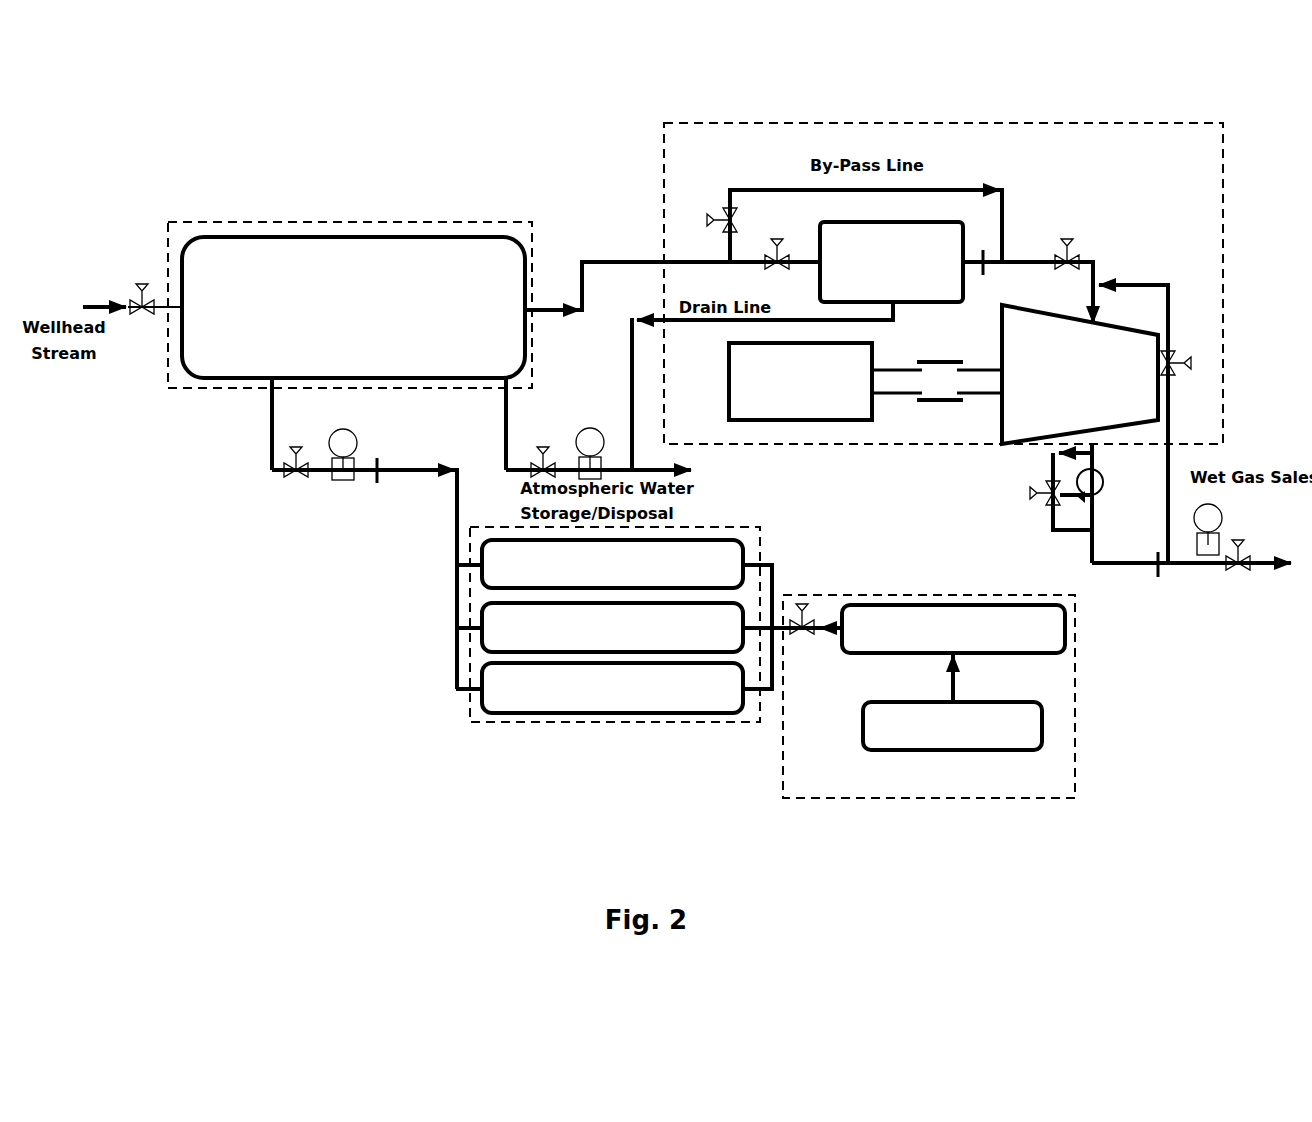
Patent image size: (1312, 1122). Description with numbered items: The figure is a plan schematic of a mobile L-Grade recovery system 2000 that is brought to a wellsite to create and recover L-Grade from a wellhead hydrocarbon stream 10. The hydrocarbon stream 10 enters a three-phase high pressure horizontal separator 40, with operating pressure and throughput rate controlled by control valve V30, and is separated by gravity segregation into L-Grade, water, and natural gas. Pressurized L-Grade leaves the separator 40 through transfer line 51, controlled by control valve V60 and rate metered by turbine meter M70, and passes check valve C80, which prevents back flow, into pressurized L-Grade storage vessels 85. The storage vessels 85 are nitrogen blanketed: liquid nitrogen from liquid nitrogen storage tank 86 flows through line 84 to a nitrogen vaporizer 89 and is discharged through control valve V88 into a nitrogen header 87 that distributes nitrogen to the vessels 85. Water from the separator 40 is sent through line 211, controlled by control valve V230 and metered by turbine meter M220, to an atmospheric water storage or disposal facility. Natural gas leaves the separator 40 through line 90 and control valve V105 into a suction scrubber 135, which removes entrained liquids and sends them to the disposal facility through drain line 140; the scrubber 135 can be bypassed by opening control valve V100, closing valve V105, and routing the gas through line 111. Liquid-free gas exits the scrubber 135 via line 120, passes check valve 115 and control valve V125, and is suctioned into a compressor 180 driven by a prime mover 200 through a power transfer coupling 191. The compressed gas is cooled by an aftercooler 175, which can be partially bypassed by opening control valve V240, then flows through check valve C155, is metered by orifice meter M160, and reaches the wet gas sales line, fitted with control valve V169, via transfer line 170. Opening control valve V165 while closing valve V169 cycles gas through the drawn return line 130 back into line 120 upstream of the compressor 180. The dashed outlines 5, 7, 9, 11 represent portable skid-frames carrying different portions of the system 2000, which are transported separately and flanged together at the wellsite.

The mobile L-Grade recovery system 2000 is at (519, 74).
The skid-frame 5 is at (292, 216).
The wellhead hydrocarbon stream 10 is at (106, 299).
The control valve V30 is at (141, 318).
The three-phase high pressure horizontal separator 40 is at (463, 231).
The transfer line 51 is at (270, 425).
The control valve V60 is at (300, 447).
The turbine meter M70 is at (356, 439).
The check valve C80 is at (380, 460).
The line 90 is at (548, 300).
The control valve V230 is at (543, 447).
The turbine meter M220 is at (578, 432).
The line 211 is at (648, 468).
The skid-frame 7 is at (749, 121).
The control valve V100 is at (706, 215).
The line 111 is at (940, 188).
The control valve V105 is at (782, 246).
The suction scrubber 135 is at (915, 305).
The drain line 140 is at (877, 323).
The check valve 115 is at (985, 268).
The line 120 is at (1020, 260).
The control valve V125 is at (1072, 241).
The compressor 180 is at (1037, 444).
The power transfer coupling 191 is at (940, 403).
The prime mover 200 is at (745, 422).
The recycle line 130 is at (1110, 282).
The control valve V165 is at (1178, 352).
The aftercooler 175 is at (1099, 478).
The control valve V240 is at (1028, 494).
The transfer line 170 is at (1272, 570).
The check valve C155 is at (1158, 577).
The orifice meter M160 is at (1207, 566).
The control valve V169 is at (1235, 570).
The skid-frame 9 is at (463, 709).
The pressurized L-Grade storage vessels 85 is at (710, 540).
The nitrogen header 87 is at (775, 585).
The control valve V88 is at (806, 605).
The nitrogen vaporizer 89 is at (876, 605).
The line 84 is at (957, 685).
The liquid nitrogen storage tank 86 is at (940, 752).
The skid-frame 11 is at (778, 768).